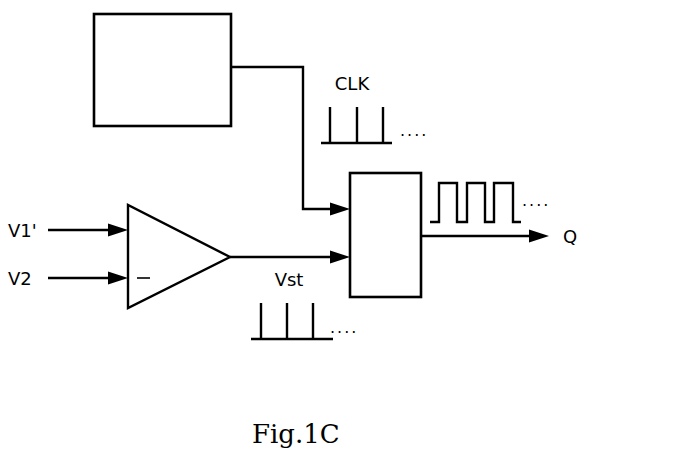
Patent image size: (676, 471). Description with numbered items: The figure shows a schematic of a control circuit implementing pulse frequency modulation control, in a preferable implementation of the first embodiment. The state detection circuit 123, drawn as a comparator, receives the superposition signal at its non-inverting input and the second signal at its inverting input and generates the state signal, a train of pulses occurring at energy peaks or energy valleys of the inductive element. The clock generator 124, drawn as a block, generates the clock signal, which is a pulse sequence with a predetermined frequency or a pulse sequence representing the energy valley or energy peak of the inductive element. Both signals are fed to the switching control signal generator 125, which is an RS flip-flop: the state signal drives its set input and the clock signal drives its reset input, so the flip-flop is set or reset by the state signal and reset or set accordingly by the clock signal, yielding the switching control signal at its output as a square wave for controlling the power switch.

The state detection circuit 123 is at (167, 220).
The clock generator 124 is at (162, 70).
The switching control signal generator 125 is at (393, 297).